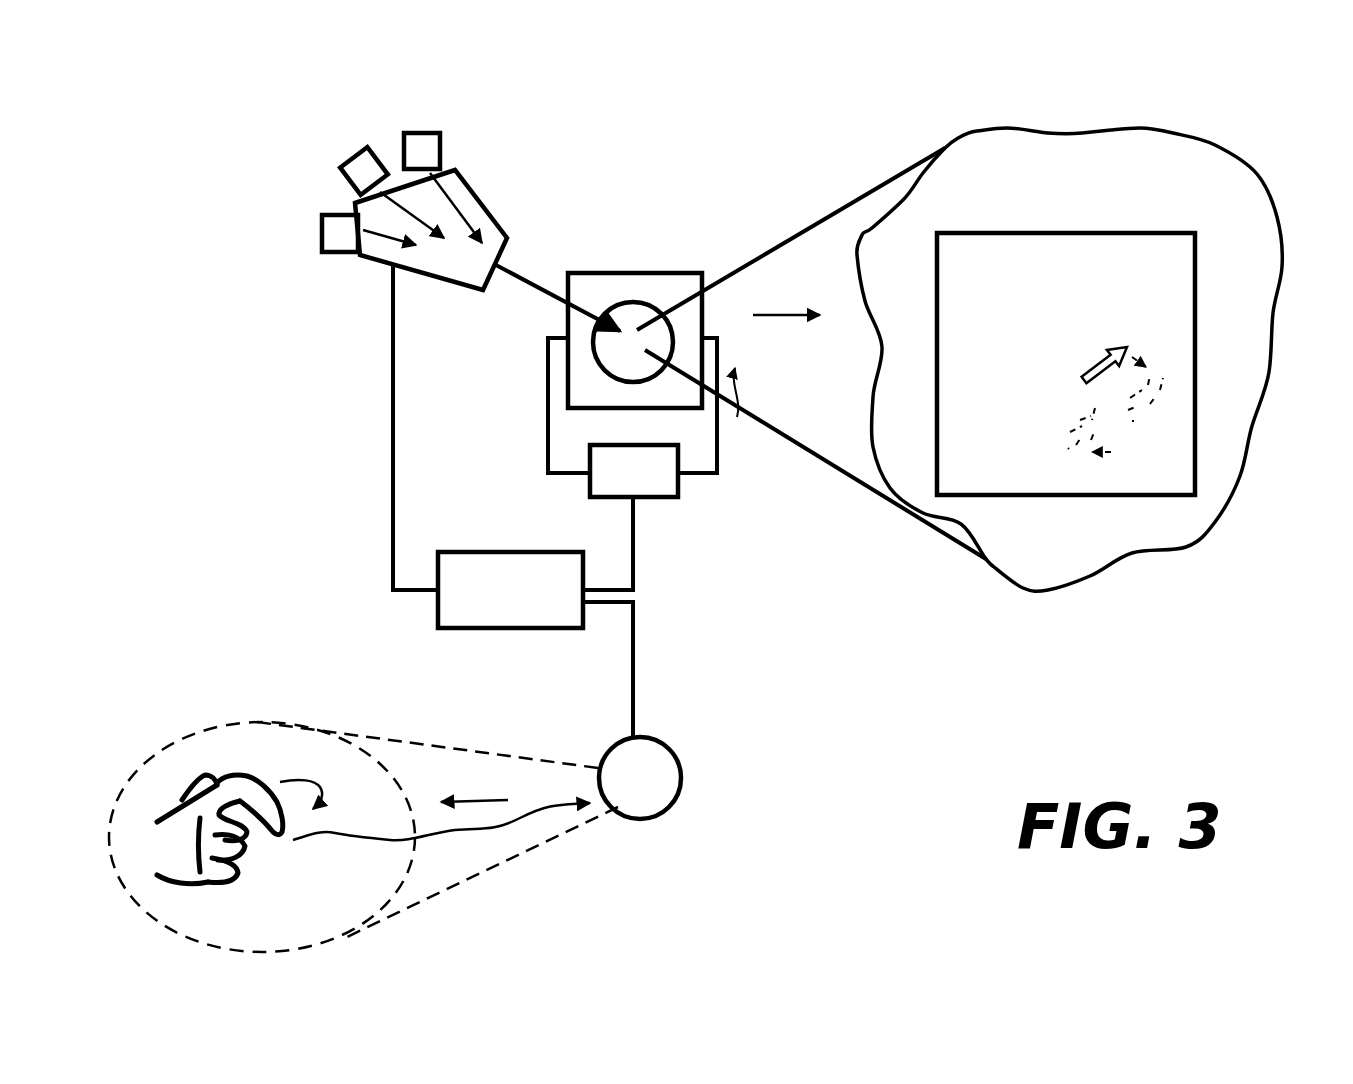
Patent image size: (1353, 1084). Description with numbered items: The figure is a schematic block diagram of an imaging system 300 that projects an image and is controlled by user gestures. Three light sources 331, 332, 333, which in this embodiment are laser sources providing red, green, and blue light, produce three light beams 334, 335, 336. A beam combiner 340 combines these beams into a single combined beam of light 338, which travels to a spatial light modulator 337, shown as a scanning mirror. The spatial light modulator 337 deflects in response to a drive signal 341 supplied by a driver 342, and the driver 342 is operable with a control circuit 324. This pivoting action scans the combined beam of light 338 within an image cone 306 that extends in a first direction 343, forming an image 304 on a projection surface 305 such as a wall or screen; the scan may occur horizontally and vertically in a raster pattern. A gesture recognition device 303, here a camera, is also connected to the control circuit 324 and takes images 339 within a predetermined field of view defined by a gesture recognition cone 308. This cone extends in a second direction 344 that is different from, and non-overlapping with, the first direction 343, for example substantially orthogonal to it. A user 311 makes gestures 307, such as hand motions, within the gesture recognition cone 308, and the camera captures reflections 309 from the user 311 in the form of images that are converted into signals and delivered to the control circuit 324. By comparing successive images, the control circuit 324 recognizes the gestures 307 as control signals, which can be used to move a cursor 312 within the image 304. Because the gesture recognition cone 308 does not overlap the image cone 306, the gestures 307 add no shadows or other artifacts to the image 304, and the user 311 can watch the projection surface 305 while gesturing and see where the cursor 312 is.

The imaging system 300 is at (306, 478).
The gesture recognition device 303 is at (650, 767).
The image 304 is at (1107, 232).
The projection surface 305 is at (1125, 132).
The image cone 306 is at (765, 253).
The gestures 307 is at (323, 803).
The gesture recognition cone 308 is at (457, 750).
The reflections 309 is at (523, 820).
The user 311 is at (212, 858).
The cursor 312 is at (1117, 347).
The control circuit 324 is at (487, 628).
The light source 331 is at (322, 233).
The light source 332 is at (342, 167).
The light source 333 is at (423, 132).
The light beam 334 is at (403, 249).
The light beam 335 is at (417, 213).
The light beam 336 is at (467, 217).
The spatial light modulator 337 is at (633, 302).
The combined beam of light 338 is at (536, 287).
The images 339 is at (230, 723).
The beam combiner 340 is at (372, 267).
The drive signal 341 is at (740, 380).
The driver 342 is at (678, 483).
The first direction 343 is at (770, 315).
The second direction 344 is at (470, 800).